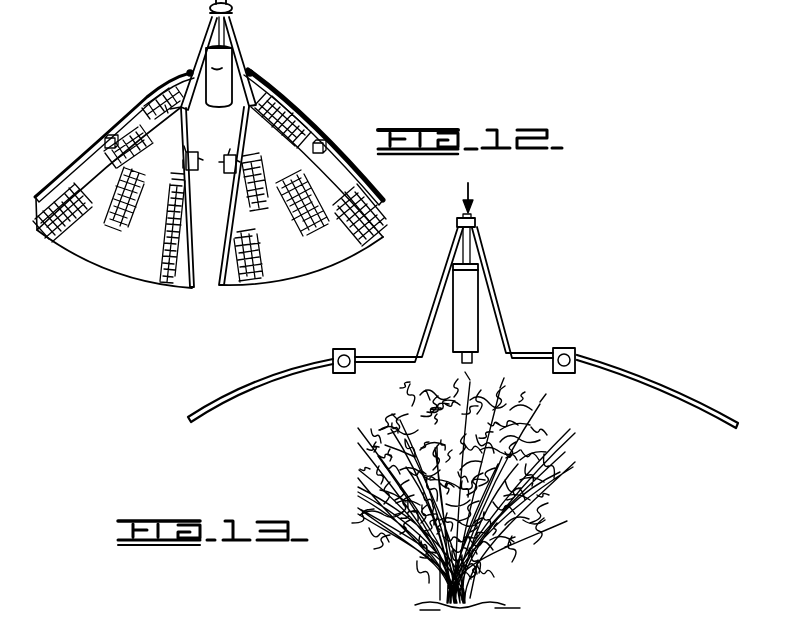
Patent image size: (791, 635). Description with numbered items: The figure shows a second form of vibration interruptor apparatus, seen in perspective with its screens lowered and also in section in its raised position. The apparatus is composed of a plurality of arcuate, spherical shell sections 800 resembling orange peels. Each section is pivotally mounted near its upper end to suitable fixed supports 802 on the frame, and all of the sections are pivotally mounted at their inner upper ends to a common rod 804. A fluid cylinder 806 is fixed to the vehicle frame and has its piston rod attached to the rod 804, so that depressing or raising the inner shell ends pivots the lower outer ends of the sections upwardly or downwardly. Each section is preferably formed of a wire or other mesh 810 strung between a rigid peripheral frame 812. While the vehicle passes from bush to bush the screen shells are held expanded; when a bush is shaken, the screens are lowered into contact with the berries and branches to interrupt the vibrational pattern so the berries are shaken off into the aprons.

In FIG. 12, the arcuate spherical shell section 800 is at (297, 132).
In FIG. 13, the arcuate spherical shell section 800 is at (268, 350).
In FIG. 12, the fixed support 802 is at (193, 154).
In FIG. 13, the fixed support 802 is at (345, 349).
In FIG. 12, the common rod 804 is at (190, 72).
In FIG. 13, the common rod 804 is at (503, 325).
In FIG. 12, the fluid cylinder 806 is at (207, 70).
In FIG. 13, the fluid cylinder 806 is at (463, 297).
In FIG. 12, the mesh 810 is at (331, 230).
In FIG. 12, the rigid peripheral frame 812 is at (277, 284).